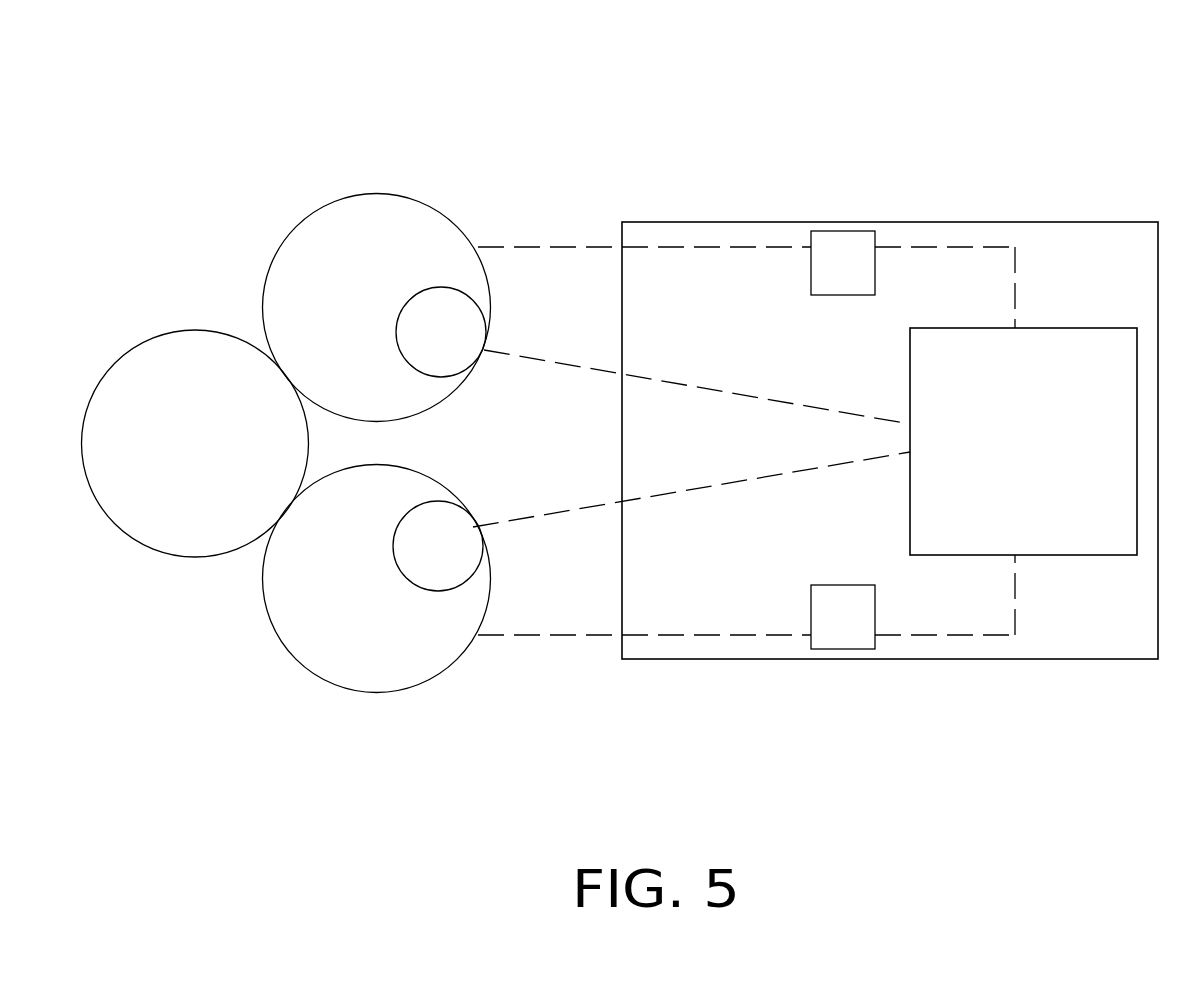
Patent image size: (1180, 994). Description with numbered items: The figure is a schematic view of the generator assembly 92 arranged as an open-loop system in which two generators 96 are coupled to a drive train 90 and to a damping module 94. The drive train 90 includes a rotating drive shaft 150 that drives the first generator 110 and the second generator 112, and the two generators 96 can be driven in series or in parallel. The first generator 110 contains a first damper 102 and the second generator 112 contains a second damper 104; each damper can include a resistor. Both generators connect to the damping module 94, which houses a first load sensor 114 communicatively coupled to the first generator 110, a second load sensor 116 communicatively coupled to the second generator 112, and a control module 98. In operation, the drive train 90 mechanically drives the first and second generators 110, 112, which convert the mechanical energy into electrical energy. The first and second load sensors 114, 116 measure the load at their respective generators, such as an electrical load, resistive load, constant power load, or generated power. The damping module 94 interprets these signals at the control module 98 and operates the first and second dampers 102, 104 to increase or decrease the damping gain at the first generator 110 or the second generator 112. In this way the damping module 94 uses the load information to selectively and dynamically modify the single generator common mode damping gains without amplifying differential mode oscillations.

The generator assembly 92 is at (487, 82).
The rotating drive shaft 150 is at (185, 315).
The drive train 90 is at (215, 453).
The generators 96 is at (316, 190).
The first generator 110 is at (372, 353).
The second generator 112 is at (372, 562).
The first damper 102 is at (467, 342).
The second damper 104 is at (462, 562).
The damping module 94 is at (774, 204).
The control module 98 is at (1045, 452).
The first load sensor 114 is at (866, 277).
The second load sensor 116 is at (866, 630).